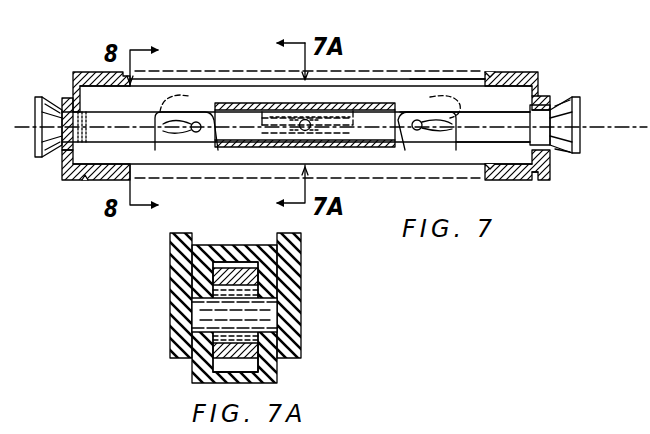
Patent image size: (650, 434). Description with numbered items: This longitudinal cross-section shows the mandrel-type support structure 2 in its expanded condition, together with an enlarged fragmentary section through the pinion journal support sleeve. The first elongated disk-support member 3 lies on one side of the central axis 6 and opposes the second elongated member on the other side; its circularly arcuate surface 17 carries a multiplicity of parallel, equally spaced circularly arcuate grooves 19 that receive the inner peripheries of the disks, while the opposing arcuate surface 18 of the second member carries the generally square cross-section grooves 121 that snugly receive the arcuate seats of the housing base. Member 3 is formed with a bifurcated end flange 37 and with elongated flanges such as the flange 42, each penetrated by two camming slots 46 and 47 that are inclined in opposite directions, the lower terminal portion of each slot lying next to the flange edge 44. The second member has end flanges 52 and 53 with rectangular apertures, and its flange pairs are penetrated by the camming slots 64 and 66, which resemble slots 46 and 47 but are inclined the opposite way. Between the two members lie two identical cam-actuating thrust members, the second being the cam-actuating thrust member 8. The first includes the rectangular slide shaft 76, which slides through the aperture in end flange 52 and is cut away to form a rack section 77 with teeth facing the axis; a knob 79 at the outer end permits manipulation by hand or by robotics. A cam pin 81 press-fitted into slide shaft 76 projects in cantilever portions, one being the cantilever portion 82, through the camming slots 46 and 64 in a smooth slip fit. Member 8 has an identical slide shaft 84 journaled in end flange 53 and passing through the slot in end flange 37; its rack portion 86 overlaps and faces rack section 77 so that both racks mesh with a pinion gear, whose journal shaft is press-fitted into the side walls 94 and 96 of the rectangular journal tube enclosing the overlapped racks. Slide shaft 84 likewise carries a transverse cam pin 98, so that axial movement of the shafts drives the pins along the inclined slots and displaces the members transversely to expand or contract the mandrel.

In FIG. 7, the mandrel-type support structure 2 is at (418, 72).
In FIG. 7, the first elongated disk-support member 3 is at (97, 72).
In FIG. 7, the central axis 6 is at (604, 130).
In FIG. 7, the cam-actuating thrust member 8 is at (494, 157).
In FIG. 7, the circularly arcuate surface 17 is at (522, 72).
In FIG. 7, the circularly arcuate surface 18 is at (505, 180).
In FIG. 7, the circularly arcuate grooves 19 is at (302, 97).
In FIG. 7, the end flange 37 is at (536, 95).
In FIG. 7A, the elongated flange 42 is at (300, 276).
In FIG. 7A, the flange edge 44 is at (180, 266).
In FIG. 7, the camming slot 46 is at (188, 100).
In FIG. 7, the camming slot 47 is at (440, 100).
In FIG. 7, the end flange 52 is at (68, 98).
In FIG. 7, the end flange 53 is at (535, 125).
In FIG. 7, the camming slot 64 is at (186, 138).
In FIG. 7, the camming slot 66 is at (456, 154).
In FIG. 7, the slide shaft 76 is at (131, 139).
In FIG. 7, the rack section 77 is at (337, 117).
In FIG. 7A, the rack section 77 is at (226, 268).
In FIG. 7, the knob 79 is at (52, 152).
In FIG. 7, the cam pin 81 is at (218, 129).
In FIG. 7, the cantilever portion 82 is at (196, 135).
In FIG. 7, the slide shaft 84 is at (506, 137).
In FIG. 7, the rack portion 86 is at (286, 133).
In FIG. 7A, the rack portion 86 is at (250, 376).
In FIG. 7A, the side wall 94 is at (202, 362).
In FIG. 7A, the side wall 96 is at (276, 342).
In FIG. 7, the cam pin 98 is at (308, 120).
In FIG. 7A, the cam pin 98 is at (202, 315).
In FIG. 7, the square cross-section grooves 121 is at (532, 182).